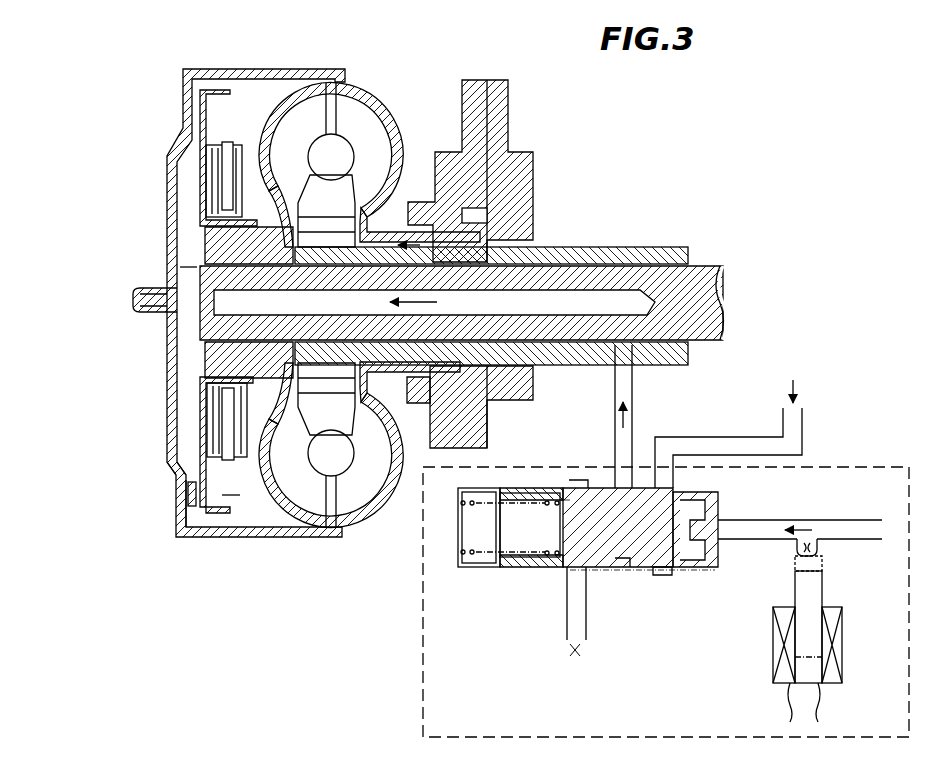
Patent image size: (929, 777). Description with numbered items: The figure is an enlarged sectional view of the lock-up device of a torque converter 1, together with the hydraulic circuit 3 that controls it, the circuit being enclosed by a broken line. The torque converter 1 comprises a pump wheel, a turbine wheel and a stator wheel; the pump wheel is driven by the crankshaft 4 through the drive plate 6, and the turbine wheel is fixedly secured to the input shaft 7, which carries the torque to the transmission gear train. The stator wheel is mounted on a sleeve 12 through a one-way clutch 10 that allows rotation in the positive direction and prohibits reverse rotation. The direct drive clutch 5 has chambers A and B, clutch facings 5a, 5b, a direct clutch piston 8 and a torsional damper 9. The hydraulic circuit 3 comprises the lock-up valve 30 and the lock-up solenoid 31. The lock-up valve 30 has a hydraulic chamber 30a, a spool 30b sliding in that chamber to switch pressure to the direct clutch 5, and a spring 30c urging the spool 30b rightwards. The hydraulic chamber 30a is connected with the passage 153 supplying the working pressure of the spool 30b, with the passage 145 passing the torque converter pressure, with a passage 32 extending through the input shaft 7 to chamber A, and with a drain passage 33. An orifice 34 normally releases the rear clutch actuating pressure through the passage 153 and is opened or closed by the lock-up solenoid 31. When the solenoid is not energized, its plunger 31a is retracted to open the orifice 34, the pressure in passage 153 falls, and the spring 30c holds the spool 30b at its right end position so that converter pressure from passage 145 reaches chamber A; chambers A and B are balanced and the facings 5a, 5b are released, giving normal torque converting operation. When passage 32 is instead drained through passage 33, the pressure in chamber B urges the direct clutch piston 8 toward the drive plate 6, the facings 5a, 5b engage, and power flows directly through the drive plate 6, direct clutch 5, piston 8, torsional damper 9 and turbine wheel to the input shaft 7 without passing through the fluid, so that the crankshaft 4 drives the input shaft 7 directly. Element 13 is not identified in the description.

The torque converter 1 is at (378, 95).
The hydraulic circuit 3 is at (420, 620).
The crankshaft 4 is at (141, 290).
The direct drive clutch 5 is at (191, 540).
The clutch facing 5a is at (188, 495).
The clutch facing 5b is at (176, 468).
The drive plate 6 is at (170, 165).
The input shaft 7 is at (545, 272).
The direct clutch piston 8 is at (200, 410).
The torsional damper 9 is at (230, 142).
The one-way clutch 10 is at (345, 235).
The sleeve 12 is at (392, 395).
The seal 13 is at (485, 213).
The lock-up valve 30 is at (584, 562).
The hydraulic chamber 30a is at (712, 568).
The spool 30b is at (640, 550).
The spring 30c is at (472, 568).
The lock-up solenoid 31 is at (884, 658).
The plunger 31a is at (796, 597).
The passage 32 is at (612, 420).
The drain passage 33 is at (588, 622).
The orifice 34 is at (822, 557).
The passage 145 is at (720, 437).
The passage 153 is at (850, 520).